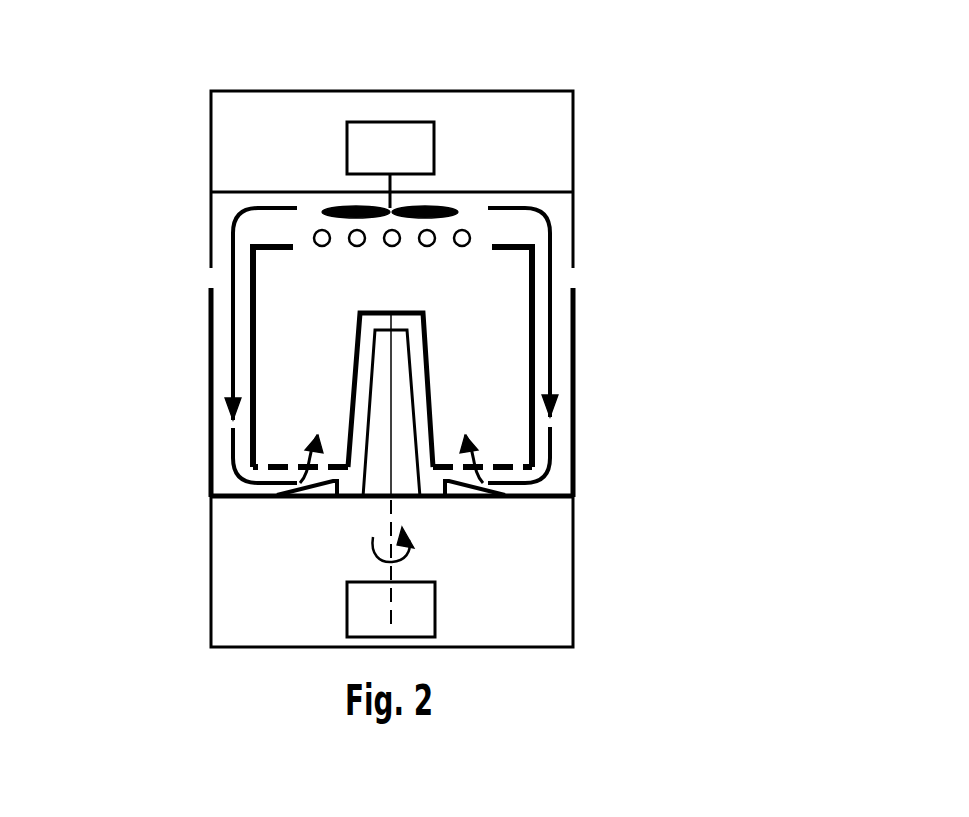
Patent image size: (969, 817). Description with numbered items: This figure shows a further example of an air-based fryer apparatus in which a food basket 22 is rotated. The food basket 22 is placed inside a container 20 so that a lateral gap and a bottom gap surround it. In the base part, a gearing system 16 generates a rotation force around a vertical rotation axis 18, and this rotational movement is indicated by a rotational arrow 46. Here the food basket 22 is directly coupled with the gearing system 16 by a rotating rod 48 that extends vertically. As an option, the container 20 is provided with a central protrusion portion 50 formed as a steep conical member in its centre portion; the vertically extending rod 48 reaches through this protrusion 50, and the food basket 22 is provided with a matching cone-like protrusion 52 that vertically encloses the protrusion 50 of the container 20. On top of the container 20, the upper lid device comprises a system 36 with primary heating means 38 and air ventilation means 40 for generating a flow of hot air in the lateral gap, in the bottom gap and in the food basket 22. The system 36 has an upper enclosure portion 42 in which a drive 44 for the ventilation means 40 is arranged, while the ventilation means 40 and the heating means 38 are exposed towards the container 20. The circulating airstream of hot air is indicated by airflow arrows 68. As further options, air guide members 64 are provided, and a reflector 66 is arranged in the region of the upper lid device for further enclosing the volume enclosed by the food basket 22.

The gearing system 16 is at (435, 608).
The vertical rotation axis 18 is at (394, 510).
The container 20 is at (575, 322).
The food basket 22 is at (537, 377).
The system 36 is at (600, 103).
The primary heating means 38 is at (463, 230).
The air ventilation means 40 is at (336, 207).
The upper enclosure portion 42 is at (471, 91).
The drive 44 is at (388, 122).
The rotational arrow 46 is at (380, 552).
The rotating rod 48 is at (393, 430).
The central protrusion portion 50 is at (368, 393).
The cone-like protrusion 52 is at (427, 335).
The air guide members 64 is at (475, 500).
The reflector 66 is at (516, 246).
The airflow arrows 68 is at (233, 240).